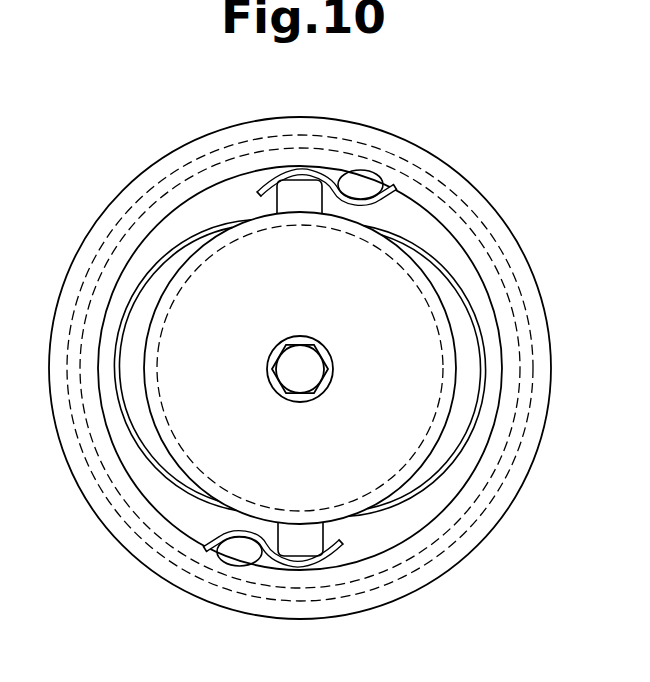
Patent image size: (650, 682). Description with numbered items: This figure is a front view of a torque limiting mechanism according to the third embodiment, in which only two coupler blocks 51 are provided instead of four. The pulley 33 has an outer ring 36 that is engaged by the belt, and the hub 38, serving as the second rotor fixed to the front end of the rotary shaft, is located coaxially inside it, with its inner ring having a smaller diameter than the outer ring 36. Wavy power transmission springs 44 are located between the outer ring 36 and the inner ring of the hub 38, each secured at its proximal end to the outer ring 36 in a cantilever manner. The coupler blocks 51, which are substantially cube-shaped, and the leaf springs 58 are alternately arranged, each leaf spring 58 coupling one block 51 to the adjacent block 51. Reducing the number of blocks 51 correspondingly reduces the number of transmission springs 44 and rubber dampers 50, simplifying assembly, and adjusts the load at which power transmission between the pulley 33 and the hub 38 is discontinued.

The pulley 33 is at (486, 197).
The outer ring 36 is at (93, 463).
The hub 38 is at (420, 329).
The wavy power transmission spring 44 is at (263, 189).
The rubber damper 50 is at (362, 184).
The coupler block 51 is at (293, 192).
The leaf spring 58 is at (118, 332).